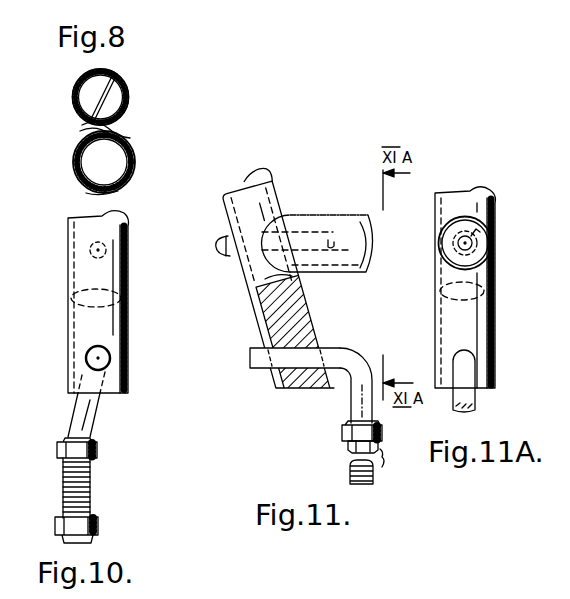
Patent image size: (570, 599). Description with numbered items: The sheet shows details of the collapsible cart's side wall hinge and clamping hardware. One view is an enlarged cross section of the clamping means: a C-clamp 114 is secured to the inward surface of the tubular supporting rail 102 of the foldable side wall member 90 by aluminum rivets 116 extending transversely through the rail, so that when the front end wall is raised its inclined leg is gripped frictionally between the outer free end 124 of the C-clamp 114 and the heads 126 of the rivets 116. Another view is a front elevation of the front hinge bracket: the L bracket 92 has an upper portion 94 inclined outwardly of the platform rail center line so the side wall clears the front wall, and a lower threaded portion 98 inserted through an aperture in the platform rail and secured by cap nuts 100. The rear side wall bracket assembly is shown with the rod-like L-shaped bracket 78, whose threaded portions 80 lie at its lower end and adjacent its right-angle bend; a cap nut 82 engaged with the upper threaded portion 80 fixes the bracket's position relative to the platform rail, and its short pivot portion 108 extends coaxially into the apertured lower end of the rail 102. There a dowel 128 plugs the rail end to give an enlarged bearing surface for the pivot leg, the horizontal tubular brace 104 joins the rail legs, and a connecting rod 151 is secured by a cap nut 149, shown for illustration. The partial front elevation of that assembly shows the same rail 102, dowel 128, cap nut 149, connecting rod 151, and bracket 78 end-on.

In FIG. 11, the L-shaped bracket 78 is at (350, 406).
In FIG. 11A, the L-shaped bracket 78 is at (478, 402).
In FIG. 11, the threaded portions 80 is at (355, 449).
In FIG. 11, the cap nut 82 is at (344, 432).
In FIG. 8, the foldable side wall member 90 is at (129, 92).
In FIG. 10, the L bracket 92 is at (90, 476).
In FIG. 10, the upper portion 94 is at (100, 413).
In FIG. 10, the lower threaded portion 98 is at (90, 498).
In FIG. 10, the cap nuts 100 is at (96, 449).
In FIG. 8, the supporting rail 102 is at (128, 107).
In FIG. 10, the supporting rail 102 is at (98, 302).
In FIG. 11, the supporting rail 102 is at (225, 218).
In FIG. 11A, the supporting rail 102 is at (487, 291).
In FIG. 11, the horizontal tubular brace 104 is at (340, 273).
In FIG. 11A, the horizontal tubular brace 104 is at (437, 222).
In FIG. 11, the pivot portion 108 is at (250, 360).
In FIG. 8, the C-clamp 114 is at (135, 146).
In FIG. 8, the aluminum rivets 116 is at (112, 73).
In FIG. 8, the outer free end 124 is at (88, 192).
In FIG. 8, the heads 126 is at (86, 128).
In FIG. 10, the dowel 128 is at (78, 280).
In FIG. 11, the dowel 128 is at (262, 316).
In FIG. 11A, the dowel 128 is at (490, 276).
In FIG. 11, the cap nut 149 is at (225, 255).
In FIG. 11A, the cap nut 149 is at (486, 222).
In FIG. 10, the connecting rod 151 is at (76, 243).
In FIG. 11, the connecting rod 151 is at (310, 230).
In FIG. 11A, the connecting rod 151 is at (476, 243).